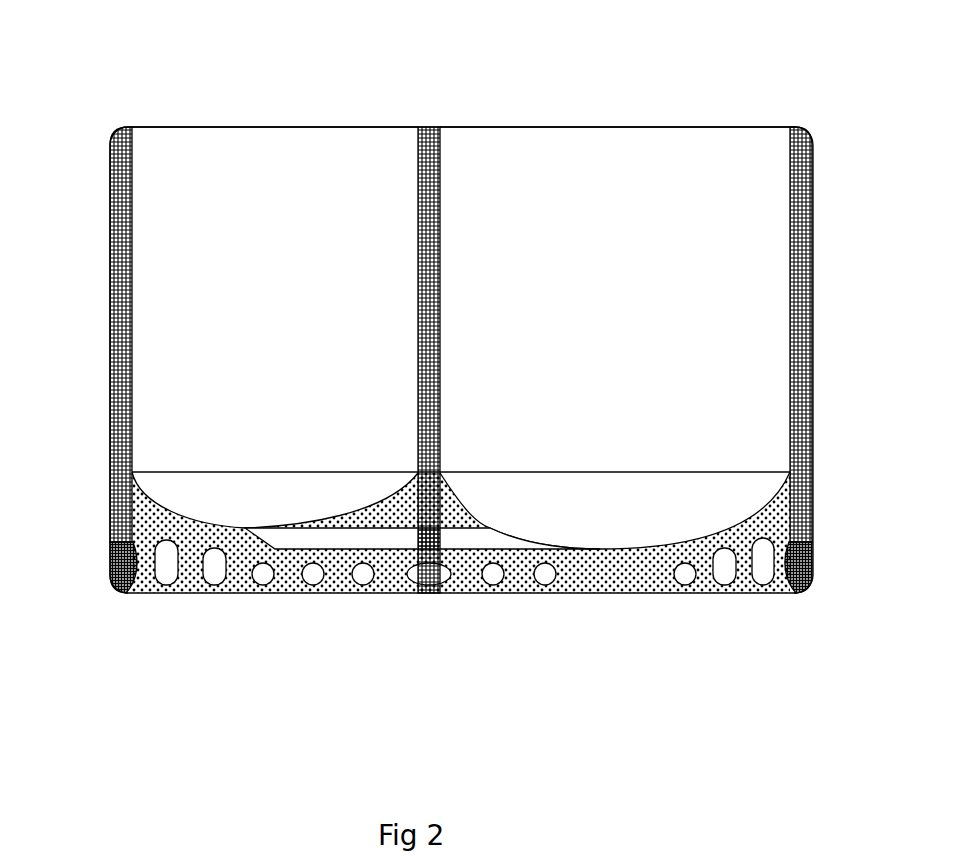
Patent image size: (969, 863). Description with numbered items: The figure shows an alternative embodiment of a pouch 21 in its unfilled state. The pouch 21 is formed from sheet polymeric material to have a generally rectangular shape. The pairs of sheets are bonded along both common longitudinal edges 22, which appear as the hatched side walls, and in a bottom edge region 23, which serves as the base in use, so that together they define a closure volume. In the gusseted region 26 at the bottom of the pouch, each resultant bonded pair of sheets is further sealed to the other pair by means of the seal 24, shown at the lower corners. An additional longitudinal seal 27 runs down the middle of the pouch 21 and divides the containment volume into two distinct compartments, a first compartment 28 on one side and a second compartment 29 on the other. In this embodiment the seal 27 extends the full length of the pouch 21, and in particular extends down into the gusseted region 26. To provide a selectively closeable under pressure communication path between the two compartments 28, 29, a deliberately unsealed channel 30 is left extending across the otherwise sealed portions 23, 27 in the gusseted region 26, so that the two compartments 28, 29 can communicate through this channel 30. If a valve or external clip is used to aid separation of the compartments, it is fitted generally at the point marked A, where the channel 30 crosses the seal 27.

The pouch 21 is at (461, 305).
The common longitudinal edges 22 is at (122, 153).
The bottom edge region 23 is at (192, 578).
The seal 24 is at (805, 563).
The gusseted region 26 is at (94, 473).
The longitudinal seal 27 is at (434, 140).
The first compartment 28 is at (320, 152).
The second compartment 29 is at (632, 145).
The unsealed channel 30 is at (387, 541).
The point A is at (434, 541).